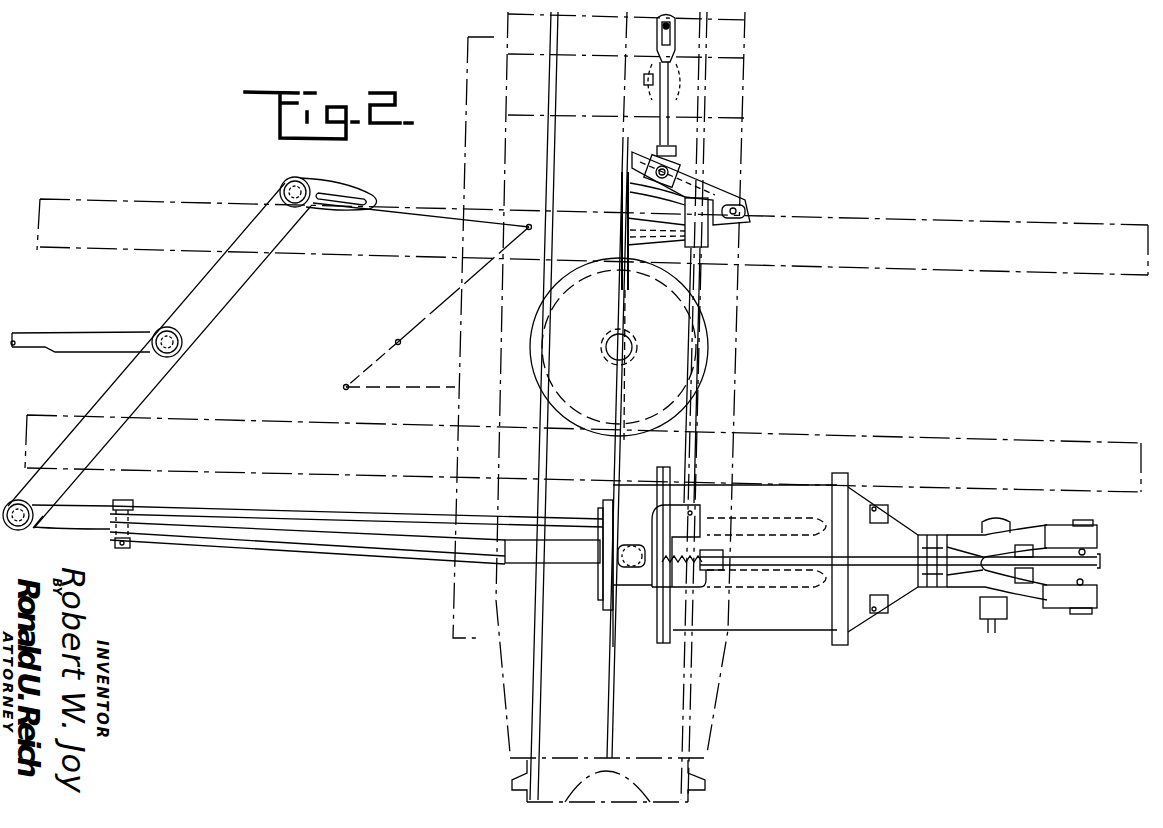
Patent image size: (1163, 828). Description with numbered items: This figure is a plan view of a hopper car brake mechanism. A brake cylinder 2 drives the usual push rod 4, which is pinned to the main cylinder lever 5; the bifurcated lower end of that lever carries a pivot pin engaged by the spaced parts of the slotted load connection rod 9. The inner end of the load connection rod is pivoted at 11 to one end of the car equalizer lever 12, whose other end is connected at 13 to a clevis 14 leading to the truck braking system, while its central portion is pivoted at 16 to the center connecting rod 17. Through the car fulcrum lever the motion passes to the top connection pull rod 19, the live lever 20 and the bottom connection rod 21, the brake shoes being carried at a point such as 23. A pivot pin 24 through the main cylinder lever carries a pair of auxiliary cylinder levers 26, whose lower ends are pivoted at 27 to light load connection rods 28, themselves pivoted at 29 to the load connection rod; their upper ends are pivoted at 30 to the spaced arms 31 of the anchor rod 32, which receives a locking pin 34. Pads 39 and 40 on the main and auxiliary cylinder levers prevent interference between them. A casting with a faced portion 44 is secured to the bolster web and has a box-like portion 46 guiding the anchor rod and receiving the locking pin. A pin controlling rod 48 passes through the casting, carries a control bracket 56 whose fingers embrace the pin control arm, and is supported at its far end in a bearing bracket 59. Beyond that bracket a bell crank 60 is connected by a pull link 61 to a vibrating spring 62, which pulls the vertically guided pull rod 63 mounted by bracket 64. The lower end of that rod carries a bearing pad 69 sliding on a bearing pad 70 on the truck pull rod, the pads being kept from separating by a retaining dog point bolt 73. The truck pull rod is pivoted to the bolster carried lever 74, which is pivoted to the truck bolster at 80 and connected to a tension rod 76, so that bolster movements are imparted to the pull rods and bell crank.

The brake cylinder 2 is at (730, 560).
The push rod 4 is at (958, 548).
The main cylinder lever 5 is at (1100, 563).
The load connection rod 9 is at (373, 535).
The pivot 11 is at (14, 533).
The car equalizer lever 12 is at (159, 355).
The connection 13 is at (283, 188).
The clevis 14 is at (343, 200).
The pivot 16 is at (174, 348).
The center connecting rod 17 is at (38, 338).
The top connection pull rod 19 is at (422, 218).
The live lever 20 is at (445, 310).
The bottom connection rod 21 is at (422, 388).
The brake shoe point 23 is at (395, 341).
The pivot pin 24 is at (990, 625).
The auxiliary cylinder levers 26 is at (955, 590).
The pivot 27 is at (882, 605).
The light load connection rods 28 is at (283, 560).
The pivot 29 is at (125, 548).
The pivot 30 is at (1085, 614).
The spaced arms 31 is at (1035, 586).
The anchor rod 32 is at (905, 606).
The locking pin 34 is at (618, 555).
The pad 39 is at (1015, 655).
The pad 40 is at (1058, 660).
The faced portion 44 is at (605, 602).
The box-like portion 46 is at (688, 588).
The pin controlling rod 48 is at (697, 452).
The control bracket 56 is at (657, 522).
The bearing bracket 59 is at (645, 238).
The bell crank 60 is at (708, 228).
The pull link 61 is at (748, 207).
The vibrating spring 62 is at (713, 197).
The pull rod 63 is at (655, 173).
The bracket 64 is at (640, 168).
The bearing pad 69 is at (692, 170).
The bearing pad 70 is at (628, 184).
The retaining dog point bolt 73 is at (672, 148).
The bolster carried lever 74 is at (670, 130).
The tension rod 76 is at (660, 28).
The pivot 80 is at (644, 80).